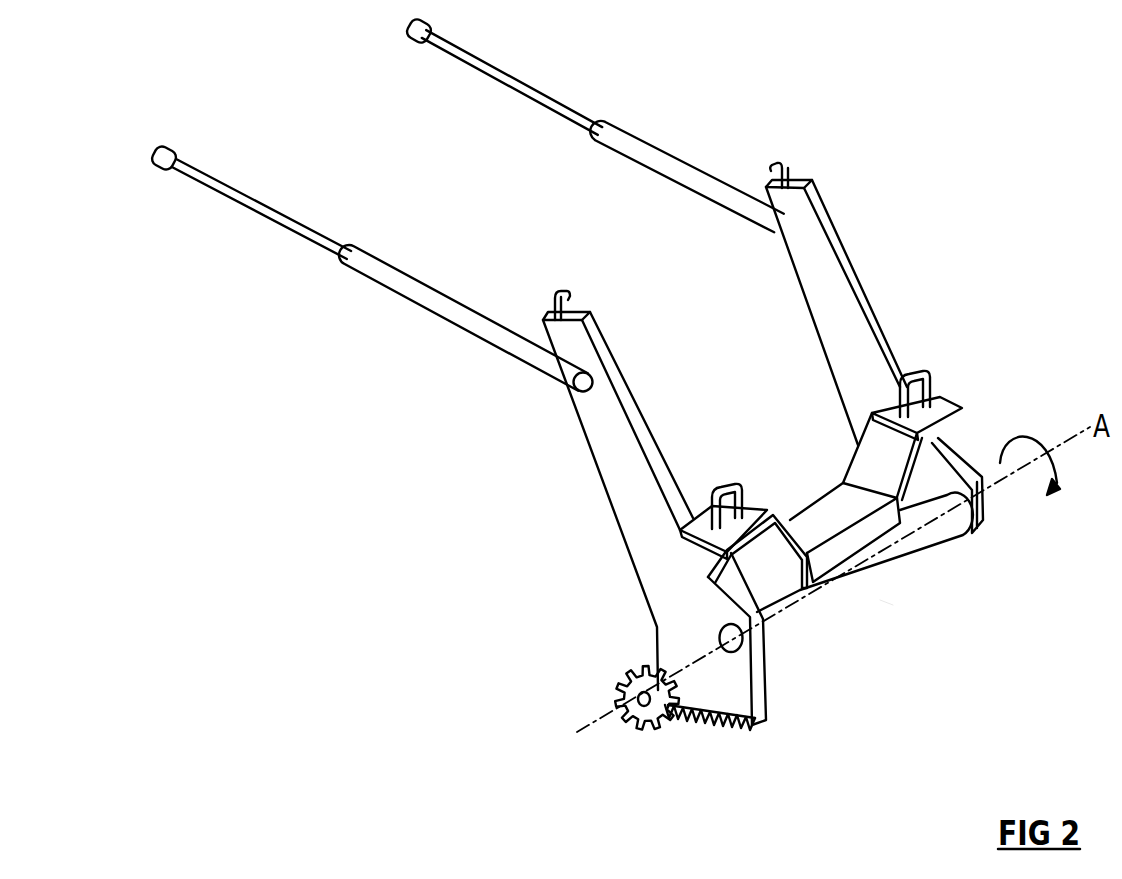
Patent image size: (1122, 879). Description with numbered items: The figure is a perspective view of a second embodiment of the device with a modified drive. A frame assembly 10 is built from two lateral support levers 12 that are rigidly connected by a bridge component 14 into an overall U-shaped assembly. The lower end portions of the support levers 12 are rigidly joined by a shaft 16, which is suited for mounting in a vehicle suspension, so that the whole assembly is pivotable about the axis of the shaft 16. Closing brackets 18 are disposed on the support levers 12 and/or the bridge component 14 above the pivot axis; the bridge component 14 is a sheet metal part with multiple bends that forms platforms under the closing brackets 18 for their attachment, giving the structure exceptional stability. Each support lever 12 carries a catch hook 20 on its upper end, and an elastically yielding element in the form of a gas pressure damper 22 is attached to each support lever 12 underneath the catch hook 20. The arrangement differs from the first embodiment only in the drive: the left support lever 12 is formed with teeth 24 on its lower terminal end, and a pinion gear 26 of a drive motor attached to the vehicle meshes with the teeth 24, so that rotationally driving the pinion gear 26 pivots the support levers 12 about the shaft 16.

The frame assembly 10 is at (893, 605).
The support lever 12 is at (620, 500).
The bridge component 14 is at (826, 503).
The shaft 16 is at (795, 605).
The closing bracket 18 is at (733, 483).
The catch hook 20 is at (561, 290).
The gas pressure damper 22 is at (418, 287).
The teeth 24 is at (717, 704).
The pinion gear 26 is at (632, 723).